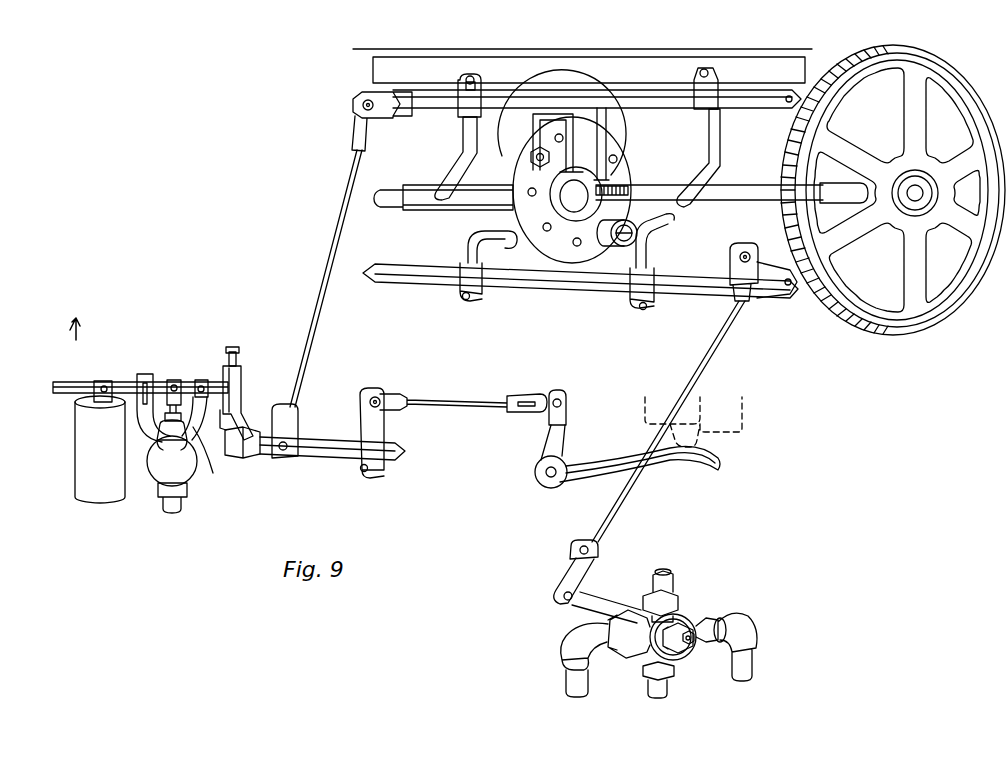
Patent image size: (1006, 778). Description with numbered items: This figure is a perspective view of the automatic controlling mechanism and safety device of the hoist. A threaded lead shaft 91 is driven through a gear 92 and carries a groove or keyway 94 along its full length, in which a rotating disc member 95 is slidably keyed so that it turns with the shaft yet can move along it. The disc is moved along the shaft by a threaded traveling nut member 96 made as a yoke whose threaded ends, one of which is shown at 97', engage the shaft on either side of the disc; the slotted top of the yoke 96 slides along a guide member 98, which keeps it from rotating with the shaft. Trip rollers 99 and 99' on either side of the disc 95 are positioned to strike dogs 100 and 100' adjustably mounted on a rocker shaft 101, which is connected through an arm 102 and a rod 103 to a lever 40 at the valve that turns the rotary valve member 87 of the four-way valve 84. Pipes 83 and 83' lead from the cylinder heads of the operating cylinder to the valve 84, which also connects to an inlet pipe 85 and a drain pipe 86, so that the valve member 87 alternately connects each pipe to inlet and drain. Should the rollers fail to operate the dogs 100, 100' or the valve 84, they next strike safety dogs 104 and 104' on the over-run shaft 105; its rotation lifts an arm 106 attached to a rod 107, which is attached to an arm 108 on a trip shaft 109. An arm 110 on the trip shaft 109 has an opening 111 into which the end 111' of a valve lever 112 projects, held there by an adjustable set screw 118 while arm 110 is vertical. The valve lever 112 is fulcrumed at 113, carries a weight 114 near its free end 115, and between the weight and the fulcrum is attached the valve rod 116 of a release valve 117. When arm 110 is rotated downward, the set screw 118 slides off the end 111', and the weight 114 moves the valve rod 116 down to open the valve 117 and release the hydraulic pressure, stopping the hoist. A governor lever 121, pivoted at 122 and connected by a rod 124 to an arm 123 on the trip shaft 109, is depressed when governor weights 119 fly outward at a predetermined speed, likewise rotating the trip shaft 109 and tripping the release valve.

The lever rod 40 is at (592, 597).
The pipe 83 is at (726, 647).
The pipe 83' is at (605, 653).
The four-way valve 84 is at (648, 650).
The inlet pipe 85 is at (673, 578).
The drain pipe 86 is at (657, 698).
The rotary valve member 87 is at (694, 653).
The threaded lead shaft 91 is at (726, 184).
The gear 92 is at (890, 121).
The keyway 94 is at (458, 211).
The rotating disc member 95 is at (551, 164).
The threaded traveling nut member 96 is at (562, 120).
The threaded end 97' is at (630, 173).
The guide member 98 is at (582, 66).
The trip roller 99 is at (562, 185).
The trip roller 99' is at (633, 240).
The dog 100 is at (497, 266).
The dog 100' is at (672, 259).
The rocker shaft 101 is at (553, 288).
The arm 102 is at (750, 252).
The rod 103 is at (707, 342).
The safety dog 104 is at (458, 137).
The safety dog 104' is at (689, 137).
The over-run shaft 105 is at (430, 96).
The arm 106 is at (389, 114).
The rod 107 is at (318, 318).
The arm 108 is at (300, 456).
The trip shaft 109 is at (335, 438).
The arm 110 is at (252, 418).
The opening 111 is at (218, 417).
The end of valve lever 111' is at (252, 399).
The valve lever 112 is at (176, 381).
The fulcrum 113 is at (200, 380).
The weight 114 is at (100, 442).
The free end 115 is at (62, 382).
The valve rod 116 is at (185, 427).
The release valve 117 is at (172, 466).
The adjustable set screw 118 is at (238, 353).
The governor weights 119 is at (693, 422).
The governor lever 121 is at (700, 468).
The pivot 122 is at (546, 476).
The arm 123 is at (383, 426).
The rod 124 is at (450, 400).